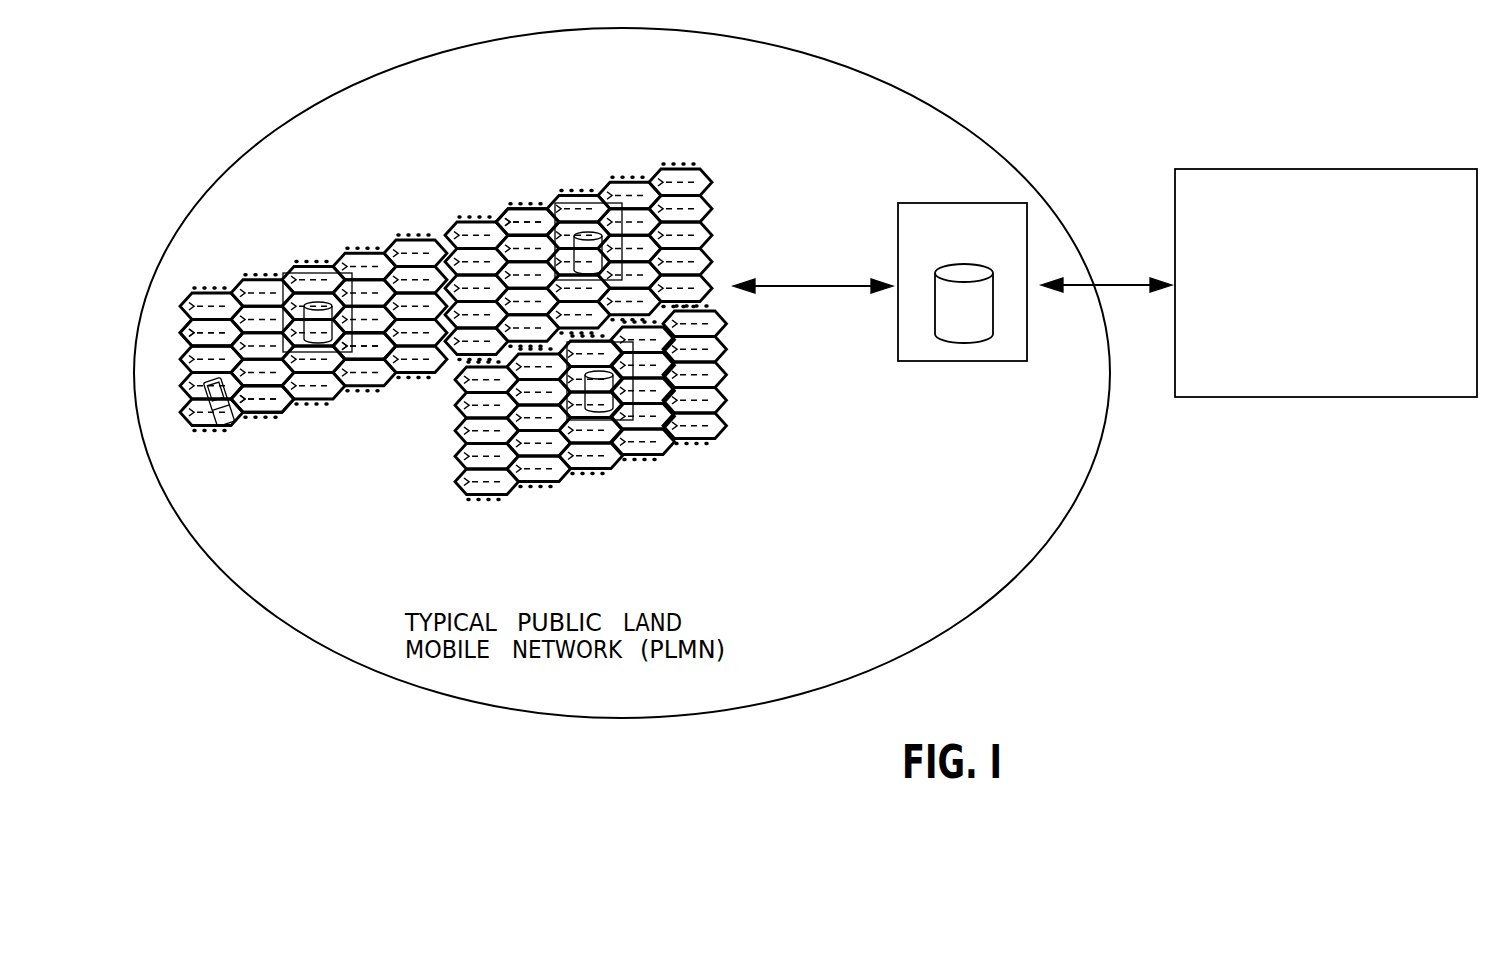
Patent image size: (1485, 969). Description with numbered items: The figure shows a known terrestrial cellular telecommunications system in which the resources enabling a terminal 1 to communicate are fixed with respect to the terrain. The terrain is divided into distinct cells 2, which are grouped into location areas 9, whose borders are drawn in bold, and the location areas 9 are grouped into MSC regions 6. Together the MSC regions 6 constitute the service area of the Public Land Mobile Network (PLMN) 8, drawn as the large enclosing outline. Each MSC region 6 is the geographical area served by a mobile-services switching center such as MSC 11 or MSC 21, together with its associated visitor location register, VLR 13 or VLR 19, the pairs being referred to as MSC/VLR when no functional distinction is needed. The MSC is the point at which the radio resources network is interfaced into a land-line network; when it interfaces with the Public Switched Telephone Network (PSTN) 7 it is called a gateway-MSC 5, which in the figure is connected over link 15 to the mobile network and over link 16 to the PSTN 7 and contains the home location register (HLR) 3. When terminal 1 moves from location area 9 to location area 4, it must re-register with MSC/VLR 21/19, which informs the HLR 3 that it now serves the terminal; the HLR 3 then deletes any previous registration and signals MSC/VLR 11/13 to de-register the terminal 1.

The terminal 1 is at (208, 422).
The cell 2 is at (212, 338).
The home location register (HLR) 3 is at (973, 333).
The location area 4 is at (530, 229).
The gateway-MSC (GW-MSC) 5 is at (918, 250).
The MSC region 6 is at (437, 218).
The Public Switched Telephone Network (PSTN) 7 is at (1333, 223).
The Public Land Mobile Network (PLMN) 8 is at (293, 632).
The location area 9 is at (248, 402).
The mobile-services switching center (MSC) 11 is at (318, 282).
The visitor location register (VLR) 13 is at (345, 355).
The link between PLMN and gateway 15 is at (827, 284).
The link between gateway and PSTN 16 is at (1112, 278).
The visitor location register (VLR) 19 is at (603, 241).
The mobile-services switching center (MSC) 21 is at (570, 200).